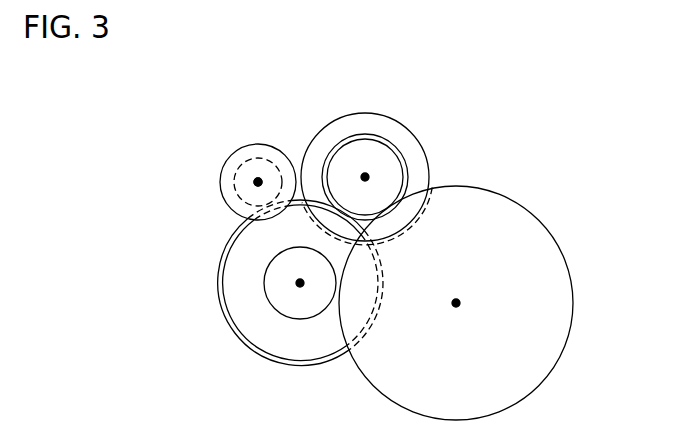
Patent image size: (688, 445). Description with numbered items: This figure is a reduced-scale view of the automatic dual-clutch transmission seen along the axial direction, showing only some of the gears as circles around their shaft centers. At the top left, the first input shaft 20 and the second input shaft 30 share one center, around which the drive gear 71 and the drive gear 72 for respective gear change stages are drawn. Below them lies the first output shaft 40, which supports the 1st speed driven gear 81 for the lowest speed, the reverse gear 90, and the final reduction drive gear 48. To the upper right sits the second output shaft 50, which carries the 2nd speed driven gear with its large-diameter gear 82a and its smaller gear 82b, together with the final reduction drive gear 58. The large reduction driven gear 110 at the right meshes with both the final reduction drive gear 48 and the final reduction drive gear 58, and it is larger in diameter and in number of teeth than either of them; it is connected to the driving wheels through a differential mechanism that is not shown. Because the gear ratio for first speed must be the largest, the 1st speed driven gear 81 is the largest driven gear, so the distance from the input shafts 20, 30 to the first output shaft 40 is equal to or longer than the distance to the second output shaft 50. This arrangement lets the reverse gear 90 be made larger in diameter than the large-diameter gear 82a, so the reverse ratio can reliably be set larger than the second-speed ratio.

The first input shaft 20 is at (258, 182).
The second input shaft 30 is at (258, 182).
The first output shaft 40 is at (300, 283).
The final reduction drive gear 48 is at (272, 306).
The second output shaft 50 is at (365, 177).
The final reduction drive gear 58 is at (380, 142).
The drive gear 71 is at (257, 158).
The drive gear 72 is at (242, 146).
The 1st speed driven gear 81 is at (222, 265).
The large-diameter gear 82a is at (415, 133).
The small-diameter gear of the 2nd speed driven gear 82b is at (360, 135).
The reverse gear 90 is at (228, 243).
The reduction driven gear 110 is at (554, 230).